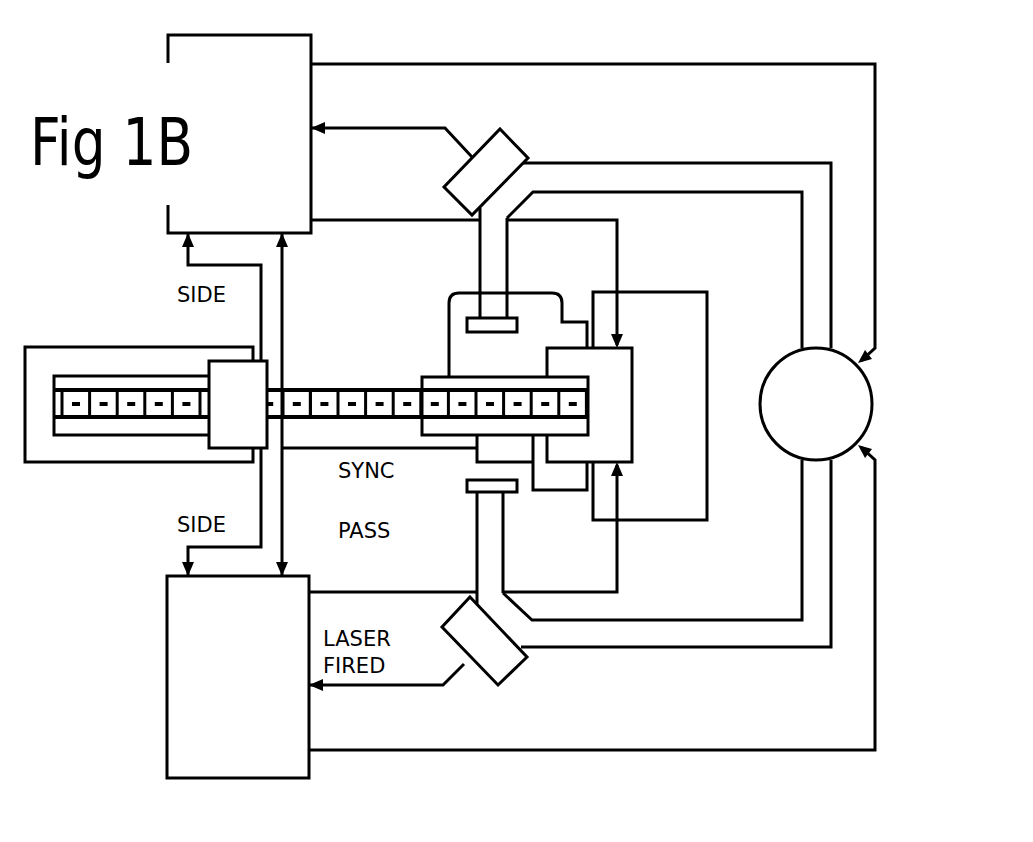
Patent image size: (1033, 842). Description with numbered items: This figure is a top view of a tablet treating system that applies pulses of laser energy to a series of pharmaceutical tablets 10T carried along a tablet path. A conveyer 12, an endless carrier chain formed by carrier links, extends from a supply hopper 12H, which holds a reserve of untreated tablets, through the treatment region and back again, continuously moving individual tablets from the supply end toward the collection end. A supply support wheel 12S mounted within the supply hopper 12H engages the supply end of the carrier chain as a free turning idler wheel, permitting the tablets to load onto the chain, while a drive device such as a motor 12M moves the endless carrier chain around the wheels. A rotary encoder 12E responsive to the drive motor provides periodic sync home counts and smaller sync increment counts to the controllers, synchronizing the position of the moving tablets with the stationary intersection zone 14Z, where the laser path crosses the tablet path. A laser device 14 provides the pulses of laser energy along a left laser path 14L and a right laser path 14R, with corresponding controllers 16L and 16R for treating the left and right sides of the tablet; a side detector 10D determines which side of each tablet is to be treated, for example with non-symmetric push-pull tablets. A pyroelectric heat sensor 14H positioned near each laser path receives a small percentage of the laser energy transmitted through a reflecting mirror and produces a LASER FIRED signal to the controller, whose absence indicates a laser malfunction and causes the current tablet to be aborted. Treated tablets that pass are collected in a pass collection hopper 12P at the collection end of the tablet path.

The conveyer 12 is at (375, 388).
The side detector 10D is at (263, 370).
The pharmaceutical tablets 10T is at (295, 397).
The supply support wheel 12S is at (69, 374).
The supply hopper 12H is at (69, 468).
The motor 12M is at (457, 299).
The rotary encoder 12E is at (494, 455).
The pass collection hopper 12P is at (724, 302).
The laser device 14 is at (816, 404).
The pyroelectric heat sensor 14H is at (490, 150).
The right laser path 14R is at (619, 194).
The left laser path 14L is at (618, 617).
The intersection zone 14Z is at (492, 390).
The controller 16R is at (239, 134).
The controller 16L is at (238, 677).